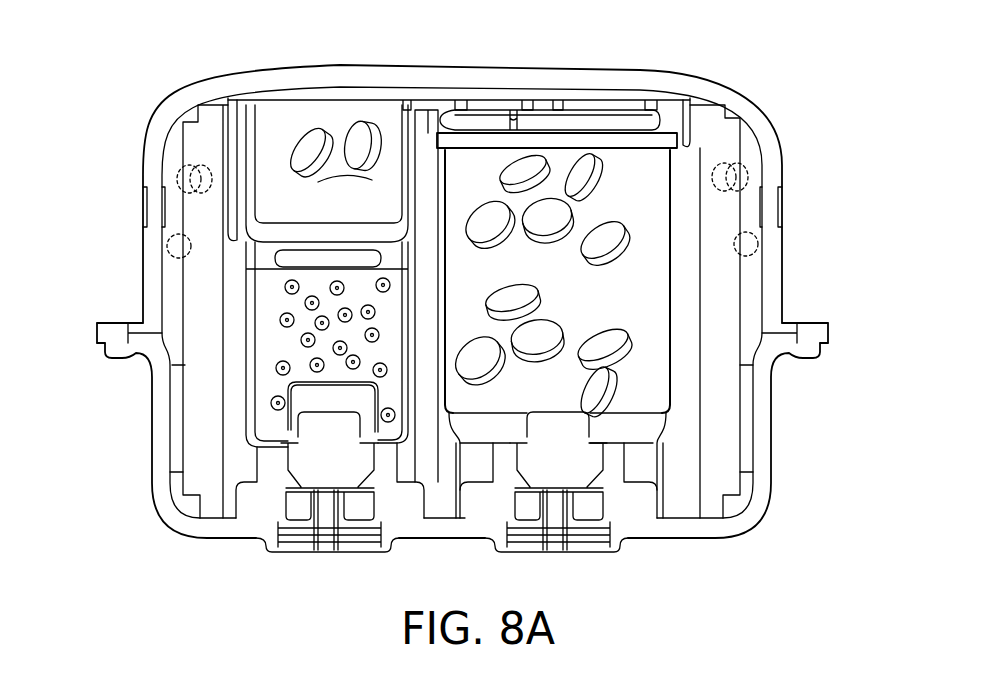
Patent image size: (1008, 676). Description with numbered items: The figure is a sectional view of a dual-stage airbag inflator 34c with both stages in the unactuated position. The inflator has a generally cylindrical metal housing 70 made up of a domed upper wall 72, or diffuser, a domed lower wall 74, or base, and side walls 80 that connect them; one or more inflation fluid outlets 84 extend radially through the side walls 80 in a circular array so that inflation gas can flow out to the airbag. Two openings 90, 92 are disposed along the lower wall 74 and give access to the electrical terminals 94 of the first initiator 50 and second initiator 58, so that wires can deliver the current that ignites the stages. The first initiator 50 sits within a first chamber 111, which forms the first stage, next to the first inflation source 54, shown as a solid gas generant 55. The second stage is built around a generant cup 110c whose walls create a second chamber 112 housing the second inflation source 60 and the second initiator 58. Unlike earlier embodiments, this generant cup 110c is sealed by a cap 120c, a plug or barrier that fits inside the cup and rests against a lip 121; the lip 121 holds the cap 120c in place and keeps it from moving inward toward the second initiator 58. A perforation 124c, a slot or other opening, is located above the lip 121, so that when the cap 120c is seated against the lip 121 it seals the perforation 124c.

The inflator 34c is at (778, 87).
The housing 70 is at (773, 265).
The upper wall 72 is at (487, 75).
The lower wall 74 is at (747, 507).
The side walls 80 is at (157, 378).
The inflation fluid outlets 84 is at (150, 207).
The generant cup 110c is at (673, 320).
The cap 120c is at (593, 140).
The perforation 124c is at (593, 122).
The lip 121 is at (443, 153).
The first inflation source 54 is at (367, 138).
The first chamber 111 is at (283, 342).
The solid gas generant 55 is at (271, 405).
The second chamber 112 is at (588, 308).
The second inflation source 60 is at (612, 250).
The first initiator 50 is at (343, 472).
The second initiator 58 is at (573, 472).
The opening 90 is at (267, 557).
The opening 92 is at (490, 557).
The electrical terminals 94 is at (336, 552).